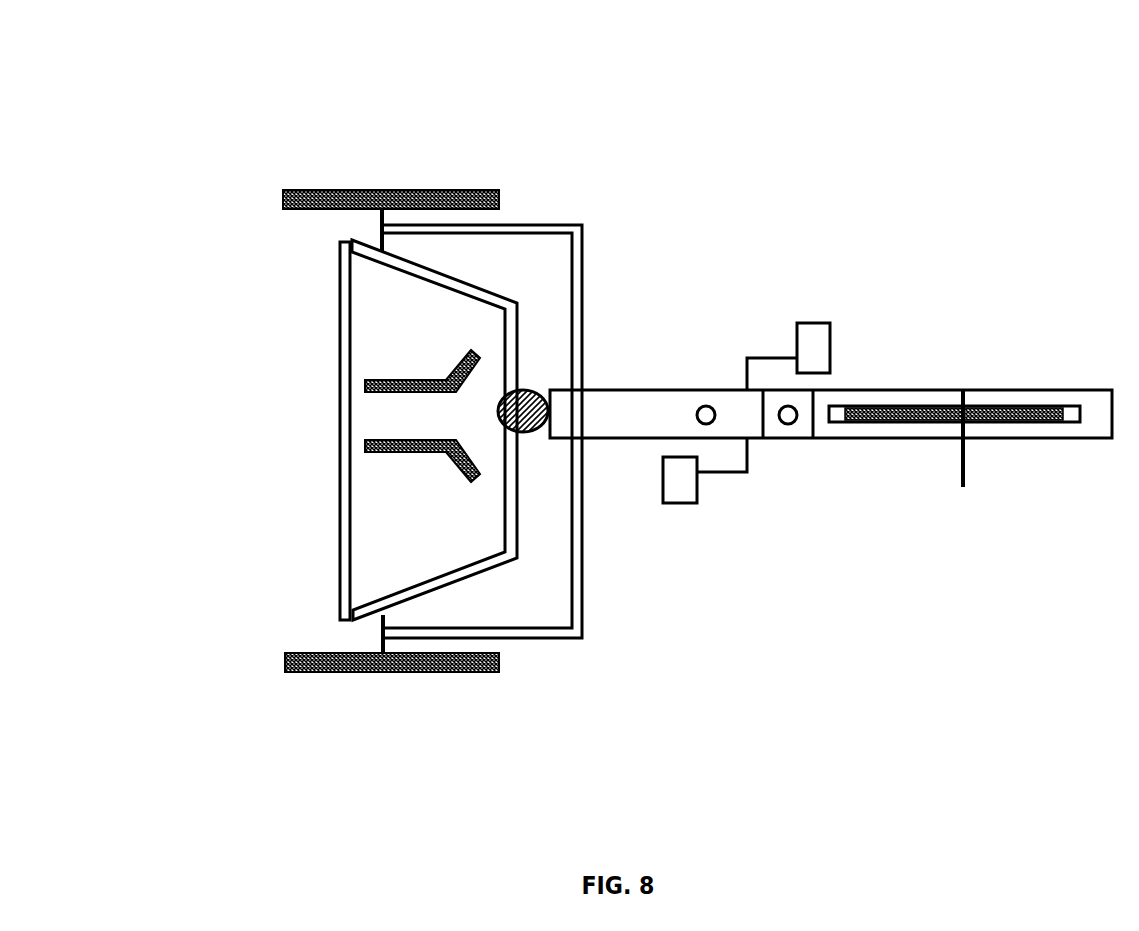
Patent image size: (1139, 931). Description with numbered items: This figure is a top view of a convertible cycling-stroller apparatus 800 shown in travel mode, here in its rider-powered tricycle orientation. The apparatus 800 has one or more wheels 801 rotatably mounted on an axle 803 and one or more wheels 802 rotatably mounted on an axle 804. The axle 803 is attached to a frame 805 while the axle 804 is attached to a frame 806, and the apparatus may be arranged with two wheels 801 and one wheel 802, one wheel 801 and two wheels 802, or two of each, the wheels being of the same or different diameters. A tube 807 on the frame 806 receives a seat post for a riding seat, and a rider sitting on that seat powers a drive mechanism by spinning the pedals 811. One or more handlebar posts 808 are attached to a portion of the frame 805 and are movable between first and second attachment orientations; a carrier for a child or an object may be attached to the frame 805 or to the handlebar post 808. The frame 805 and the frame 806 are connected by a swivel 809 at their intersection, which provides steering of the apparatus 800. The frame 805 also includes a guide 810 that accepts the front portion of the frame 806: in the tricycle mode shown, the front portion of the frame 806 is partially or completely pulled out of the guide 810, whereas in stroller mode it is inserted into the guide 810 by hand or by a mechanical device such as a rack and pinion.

The convertible cycling-stroller apparatus 800 is at (150, 91).
The wheels 801 is at (287, 190).
The wheels 802 is at (1027, 423).
The axle 803 is at (382, 228).
The axle 804 is at (963, 456).
The frame 805 is at (350, 313).
The frame 806 is at (863, 390).
The tube 807 is at (795, 422).
The handlebar post 808 is at (590, 253).
The swivel 809 is at (573, 479).
The guide 810 is at (407, 416).
The pedals 811 is at (813, 323).